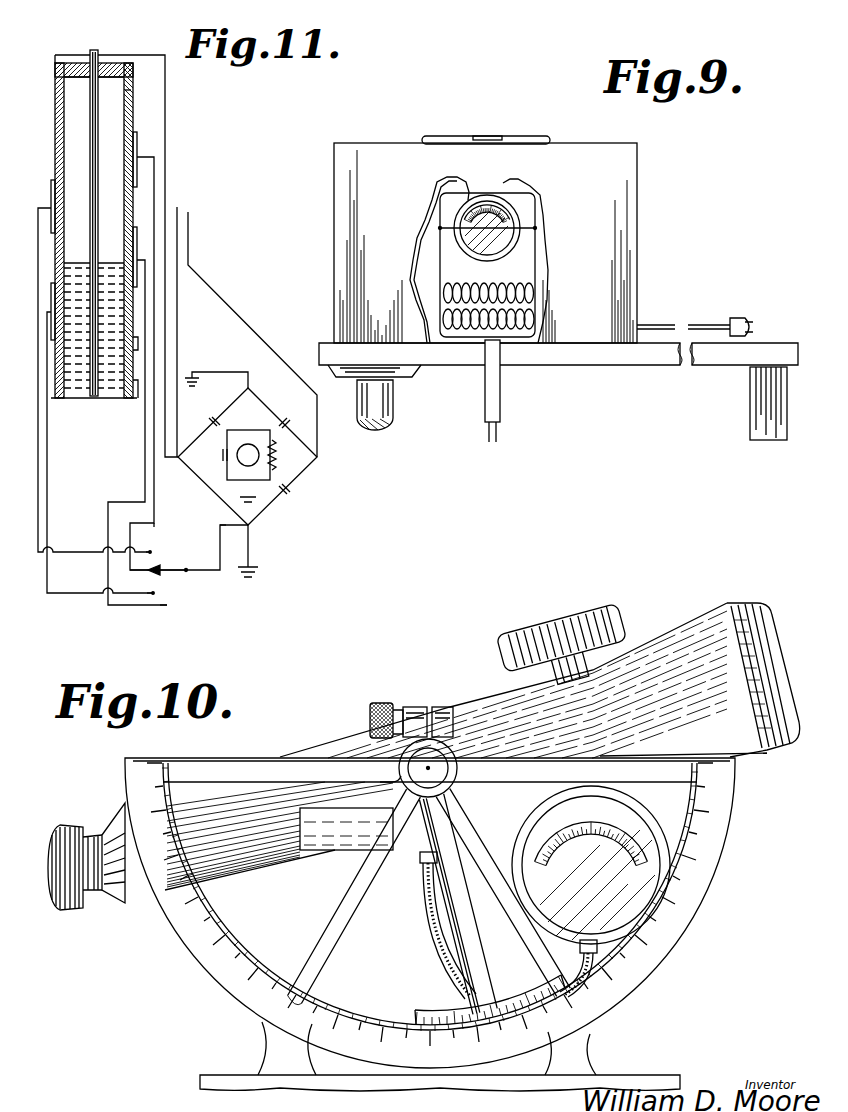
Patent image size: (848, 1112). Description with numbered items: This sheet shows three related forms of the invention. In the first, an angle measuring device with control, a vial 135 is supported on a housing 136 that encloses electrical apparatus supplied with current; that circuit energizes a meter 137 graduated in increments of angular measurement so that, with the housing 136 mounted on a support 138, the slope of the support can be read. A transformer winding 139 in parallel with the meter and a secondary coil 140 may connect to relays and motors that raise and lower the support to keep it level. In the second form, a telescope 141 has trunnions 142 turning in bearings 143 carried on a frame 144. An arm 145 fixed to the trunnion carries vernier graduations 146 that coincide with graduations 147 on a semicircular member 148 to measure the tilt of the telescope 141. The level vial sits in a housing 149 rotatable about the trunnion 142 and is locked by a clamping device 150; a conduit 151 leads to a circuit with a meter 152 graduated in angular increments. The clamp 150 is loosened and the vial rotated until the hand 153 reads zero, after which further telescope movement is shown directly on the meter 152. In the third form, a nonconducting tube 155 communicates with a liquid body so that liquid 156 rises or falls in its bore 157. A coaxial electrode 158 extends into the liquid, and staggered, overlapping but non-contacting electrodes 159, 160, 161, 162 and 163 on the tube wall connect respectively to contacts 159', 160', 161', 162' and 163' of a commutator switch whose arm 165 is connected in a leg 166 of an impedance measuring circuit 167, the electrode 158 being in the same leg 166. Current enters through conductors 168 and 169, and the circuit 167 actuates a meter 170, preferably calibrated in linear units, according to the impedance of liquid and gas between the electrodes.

In FIG. 9, the vial 135 is at (530, 142).
In FIG. 9, the housing 136 is at (637, 146).
In FIG. 9, the meter 137 is at (520, 240).
In FIG. 9, the support 138 is at (575, 362).
In FIG. 9, the winding 139 is at (531, 295).
In FIG. 9, the secondary coil 140 is at (534, 320).
In FIG. 10, the telescope 141 is at (473, 703).
In FIG. 10, the trunnion 142 is at (432, 768).
In FIG. 10, the bearings 143 is at (400, 768).
In FIG. 10, the frame 144 is at (322, 941).
In FIG. 10, the arm 145 is at (467, 937).
In FIG. 10, the graduations 146 is at (452, 1025).
In FIG. 10, the graduations 147 is at (447, 1045).
In FIG. 10, the semicircular member 148 is at (723, 863).
In FIG. 10, the housing 149 is at (306, 823).
In FIG. 10, the clamping device 150 is at (391, 694).
In FIG. 10, the conduit 151 is at (425, 916).
In FIG. 10, the meter 152 is at (645, 887).
In FIG. 10, the hand 153 is at (585, 826).
In FIG. 11, the tube 155 is at (56, 78).
In FIG. 11, the liquid 156 is at (94, 398).
In FIG. 11, the bore 157 is at (130, 113).
In FIG. 11, the electrode 158 is at (94, 52).
In FIG. 11, the electrode 159 is at (118, 394).
In FIG. 11, the electrode 160 is at (100, 413).
In FIG. 11, the electrode 161 is at (135, 407).
In FIG. 11, the electrode 162 is at (84, 350).
In FIG. 11, the electrode 163 is at (189, 340).
In FIG. 11, the arm 165 is at (158, 570).
In FIG. 11, the leg 166 is at (228, 525).
In FIG. 11, the impedance measuring circuit 167 is at (300, 472).
In FIG. 11, the conductor 168 is at (177, 207).
In FIG. 11, the conductor 169 is at (188, 212).
In FIG. 11, the meter 170 is at (237, 458).
In FIG. 11, the contact 159' is at (181, 620).
In FIG. 11, the contact 160' is at (183, 604).
In FIG. 11, the contact 161' is at (171, 583).
In FIG. 11, the contact 162' is at (177, 543).
In FIG. 11, the contact 163' is at (176, 518).